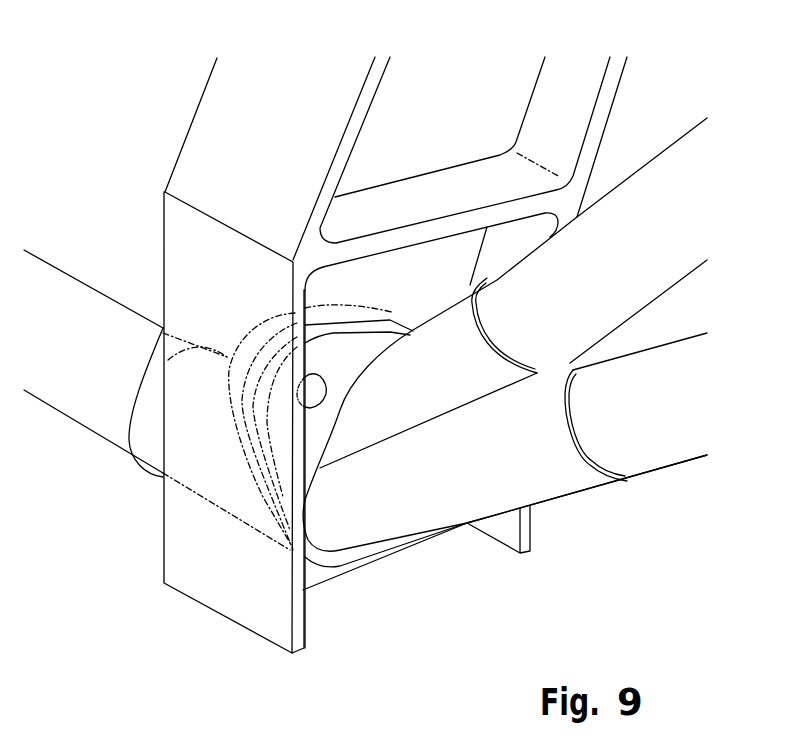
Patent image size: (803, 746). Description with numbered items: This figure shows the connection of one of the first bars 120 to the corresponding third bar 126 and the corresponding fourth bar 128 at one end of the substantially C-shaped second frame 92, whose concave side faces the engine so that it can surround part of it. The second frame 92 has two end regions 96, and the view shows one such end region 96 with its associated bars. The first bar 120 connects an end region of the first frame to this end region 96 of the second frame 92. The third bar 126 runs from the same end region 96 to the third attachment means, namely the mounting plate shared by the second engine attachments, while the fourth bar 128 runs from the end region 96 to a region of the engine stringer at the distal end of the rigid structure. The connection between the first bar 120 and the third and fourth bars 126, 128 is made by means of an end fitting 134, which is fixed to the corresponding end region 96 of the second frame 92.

The second frame 92 is at (189, 134).
The end region 96 is at (224, 572).
The first bar 120 is at (82, 372).
The third bar 126 is at (673, 417).
The fourth bar 128 is at (680, 192).
The end fitting 134 is at (243, 427).